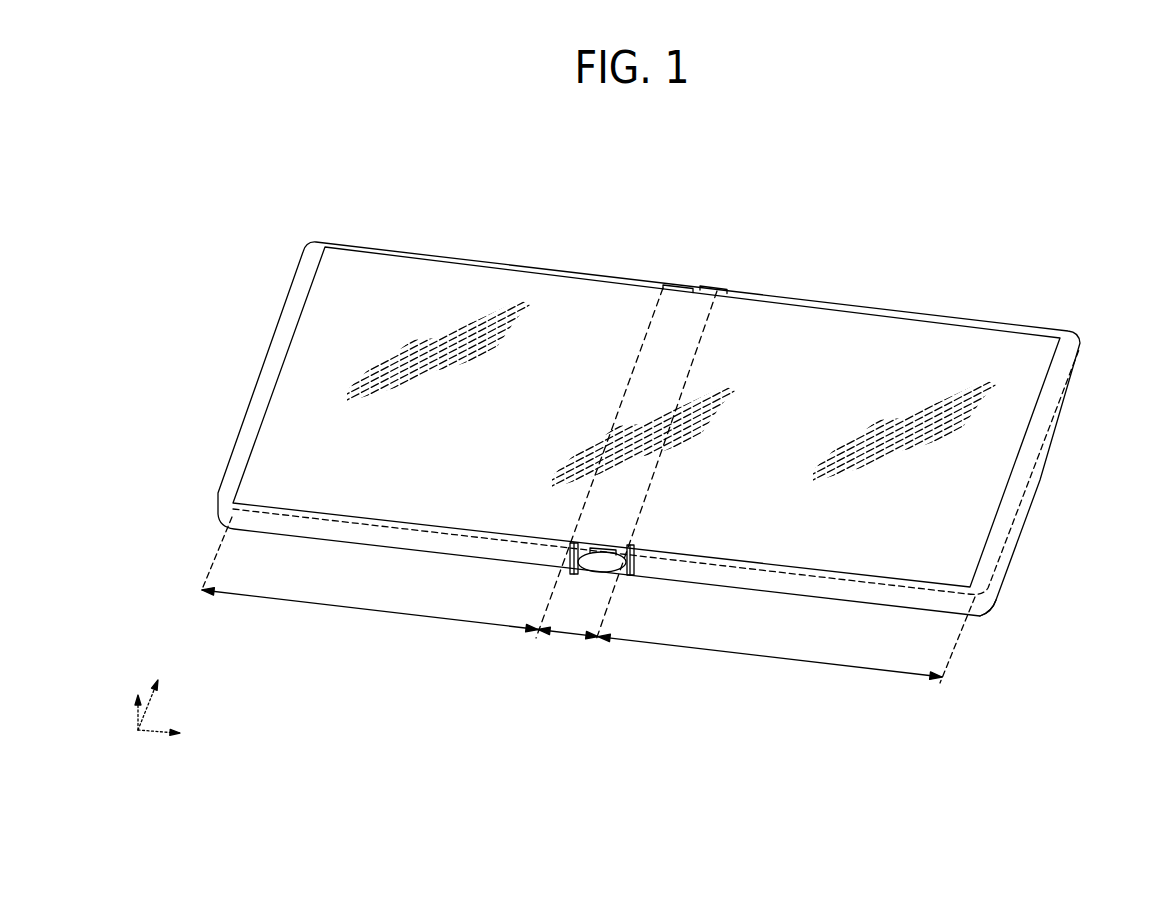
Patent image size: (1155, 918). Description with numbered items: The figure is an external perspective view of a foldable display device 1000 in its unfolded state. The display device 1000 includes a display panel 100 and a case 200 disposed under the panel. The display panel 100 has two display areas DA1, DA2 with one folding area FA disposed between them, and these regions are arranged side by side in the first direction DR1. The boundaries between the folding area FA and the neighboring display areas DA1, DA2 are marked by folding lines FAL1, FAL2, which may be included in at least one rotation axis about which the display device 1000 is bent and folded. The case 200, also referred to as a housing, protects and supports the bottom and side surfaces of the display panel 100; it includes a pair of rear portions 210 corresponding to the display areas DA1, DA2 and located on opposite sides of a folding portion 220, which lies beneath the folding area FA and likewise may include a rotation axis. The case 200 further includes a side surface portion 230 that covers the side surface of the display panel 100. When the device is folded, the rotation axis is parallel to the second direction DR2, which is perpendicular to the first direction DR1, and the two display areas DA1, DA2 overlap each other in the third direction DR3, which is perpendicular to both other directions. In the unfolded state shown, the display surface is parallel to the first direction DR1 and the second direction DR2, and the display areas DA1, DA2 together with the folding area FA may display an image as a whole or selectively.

The display device 1000 is at (498, 198).
The display panel 100 is at (715, 184).
The display area DA1 is at (588, 300).
The folding area FA is at (687, 305).
The display area DA2 is at (815, 318).
The case 200 is at (1052, 484).
The rear portion 210 is at (588, 605).
The folding portion 220 is at (632, 477).
The side surface portion 230 is at (981, 608).
The folding line FAL1 is at (585, 513).
The folding line FAL2 is at (647, 505).
The first direction DR1 is at (178, 737).
The second direction DR2 is at (161, 690).
The third direction DR3 is at (123, 699).